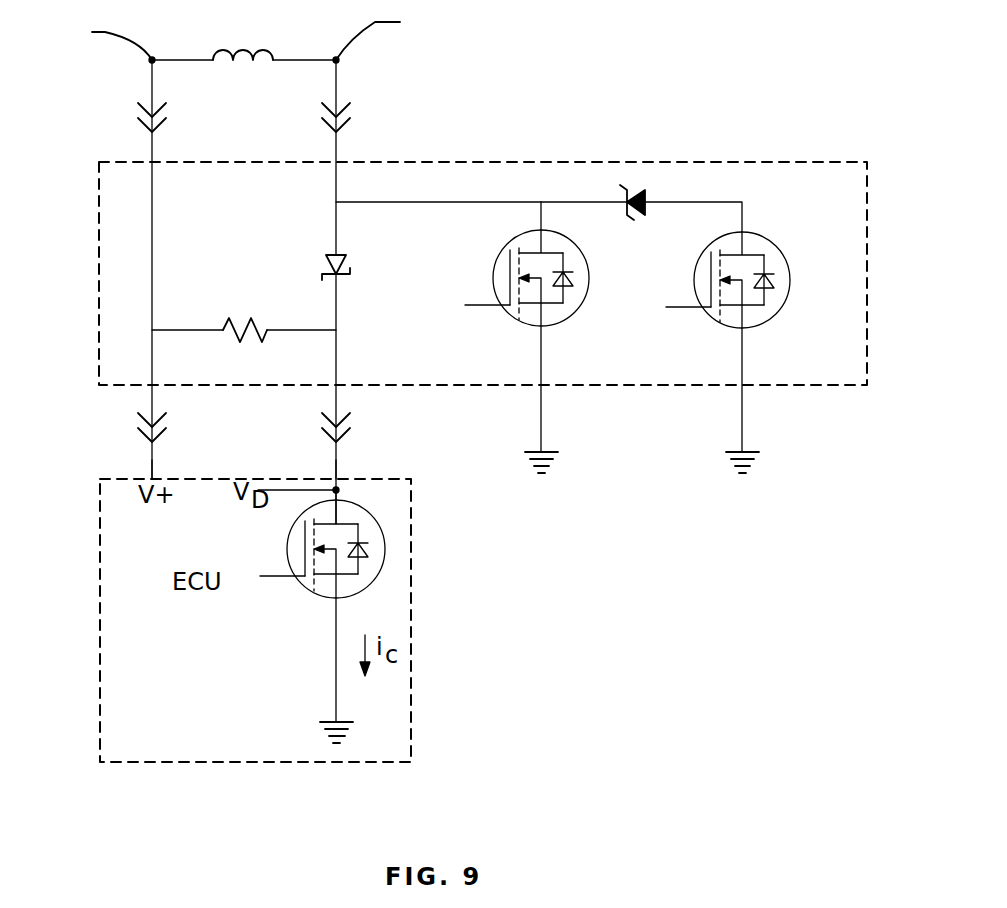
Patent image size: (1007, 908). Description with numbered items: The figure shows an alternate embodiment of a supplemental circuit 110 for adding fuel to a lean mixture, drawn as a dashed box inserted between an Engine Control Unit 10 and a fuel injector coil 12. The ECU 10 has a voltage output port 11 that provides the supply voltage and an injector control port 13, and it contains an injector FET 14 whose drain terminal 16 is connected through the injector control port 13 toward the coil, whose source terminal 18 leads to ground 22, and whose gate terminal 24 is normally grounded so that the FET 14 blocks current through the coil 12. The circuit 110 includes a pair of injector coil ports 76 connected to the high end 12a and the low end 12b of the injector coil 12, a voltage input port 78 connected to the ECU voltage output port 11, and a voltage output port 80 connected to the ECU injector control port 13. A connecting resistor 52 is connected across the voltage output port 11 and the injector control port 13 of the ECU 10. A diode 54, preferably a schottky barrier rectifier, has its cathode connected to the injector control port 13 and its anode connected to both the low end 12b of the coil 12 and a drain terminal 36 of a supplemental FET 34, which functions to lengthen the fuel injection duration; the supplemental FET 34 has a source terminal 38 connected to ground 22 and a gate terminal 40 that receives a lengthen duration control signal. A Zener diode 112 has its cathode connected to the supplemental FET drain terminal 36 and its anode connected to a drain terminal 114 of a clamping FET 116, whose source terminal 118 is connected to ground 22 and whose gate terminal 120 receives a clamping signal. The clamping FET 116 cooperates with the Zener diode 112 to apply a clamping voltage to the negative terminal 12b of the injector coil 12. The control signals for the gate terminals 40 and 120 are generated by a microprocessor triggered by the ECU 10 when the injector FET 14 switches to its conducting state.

The Engine Control Unit 10 is at (412, 695).
The voltage output port 11 is at (152, 479).
The fuel injector coil 12 is at (237, 70).
The high end 12a is at (97, 39).
The low end 12b is at (394, 34).
The injector control port 13 is at (336, 479).
The injector Field Effect Transistor 14 is at (385, 545).
The drain terminal 16 is at (328, 497).
The source terminal 18 is at (338, 600).
The ground 22 is at (310, 732).
The gate terminal 24 is at (296, 578).
The supplemental FET 34 is at (510, 265).
The drain terminal 36 is at (541, 232).
The source terminal 38 is at (541, 327).
The gate terminal 40 is at (497, 305).
The connecting resistor 52 is at (239, 316).
The diode 54 is at (313, 250).
The injector coil ports 76 is at (152, 162).
The voltage input port 78 is at (152, 387).
The voltage output port 80 is at (336, 388).
The supplemental circuit 110 is at (535, 162).
The Zener diode 112 is at (662, 186).
The drain terminal 114 is at (742, 232).
The clamping FET 116 is at (790, 295).
The source terminal 118 is at (742, 328).
The gate terminal 120 is at (700, 307).